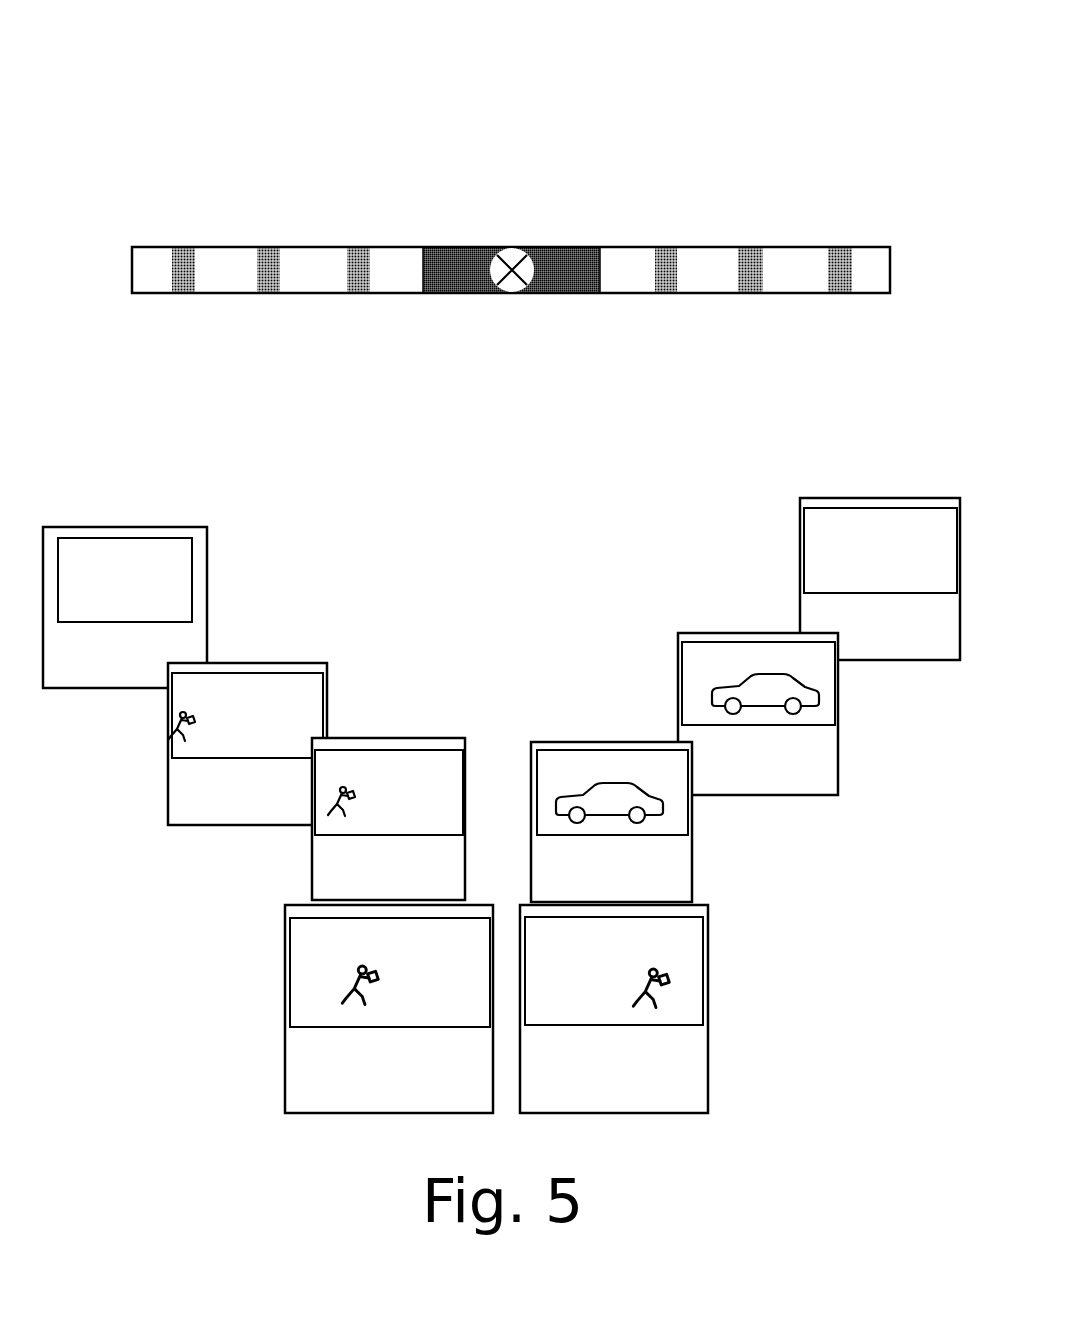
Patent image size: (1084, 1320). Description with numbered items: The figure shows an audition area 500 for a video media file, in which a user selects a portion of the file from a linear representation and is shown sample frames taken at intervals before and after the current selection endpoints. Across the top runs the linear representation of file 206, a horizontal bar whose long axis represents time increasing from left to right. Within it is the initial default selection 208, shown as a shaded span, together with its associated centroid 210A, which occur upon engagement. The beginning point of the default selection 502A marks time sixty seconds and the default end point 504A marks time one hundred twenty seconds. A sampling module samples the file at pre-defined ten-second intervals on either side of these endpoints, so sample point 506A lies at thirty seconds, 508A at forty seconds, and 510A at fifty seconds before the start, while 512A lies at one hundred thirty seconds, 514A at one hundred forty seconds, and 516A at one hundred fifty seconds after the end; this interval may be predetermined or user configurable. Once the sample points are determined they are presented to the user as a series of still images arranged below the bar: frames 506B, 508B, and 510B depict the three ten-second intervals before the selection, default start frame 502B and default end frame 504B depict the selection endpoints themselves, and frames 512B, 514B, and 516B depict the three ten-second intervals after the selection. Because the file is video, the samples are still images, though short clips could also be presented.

The audition area 500 is at (795, 46).
The linear representation of file 206 is at (506, 272).
The default selection 208 is at (438, 246).
The centroid 210A is at (513, 246).
The beginning point of the default selection 502A is at (423, 294).
The default start frame still image 502B is at (367, 1103).
The default end point 504A is at (600, 294).
The default end frame still image 504B is at (590, 1103).
The sample point 506A is at (185, 294).
The still image sample 506B is at (102, 678).
The sample point 508A is at (268, 294).
The still image sample 508B is at (224, 813).
The sample point 510A is at (357, 294).
The still image sample 510B is at (367, 891).
The sample point 512A is at (665, 294).
The still image sample 512B is at (590, 891).
The sample point 514A is at (750, 294).
The still image sample 514B is at (735, 783).
The sample point 516A is at (880, 312).
The still image sample 516B is at (857, 650).